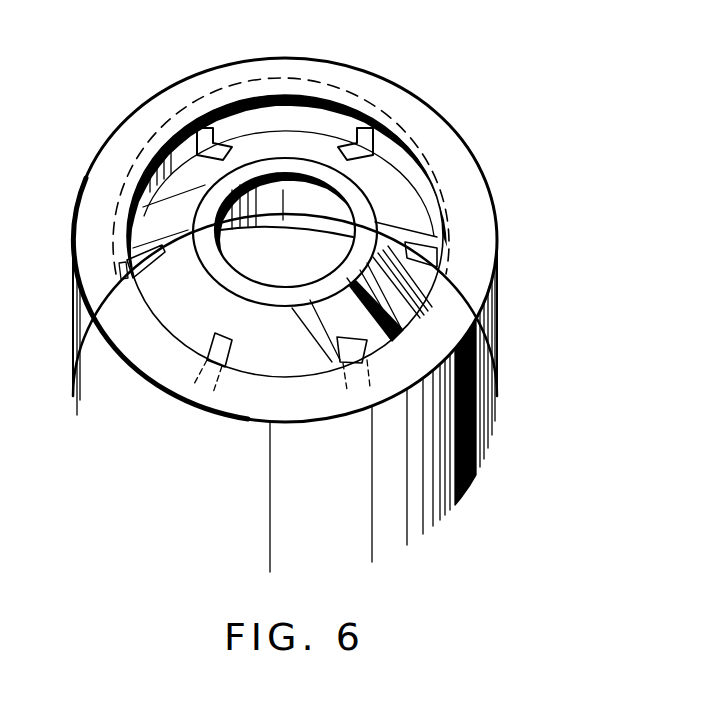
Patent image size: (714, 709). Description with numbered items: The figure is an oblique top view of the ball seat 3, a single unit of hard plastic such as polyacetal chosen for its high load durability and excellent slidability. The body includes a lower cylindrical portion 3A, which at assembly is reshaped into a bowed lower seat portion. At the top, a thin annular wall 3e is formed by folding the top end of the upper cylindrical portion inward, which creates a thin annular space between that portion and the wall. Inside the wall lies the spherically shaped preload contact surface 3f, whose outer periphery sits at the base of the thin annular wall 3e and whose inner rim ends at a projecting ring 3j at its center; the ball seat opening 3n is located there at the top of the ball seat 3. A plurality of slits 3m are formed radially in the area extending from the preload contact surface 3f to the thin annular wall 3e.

The ball seat 3 is at (458, 130).
The lower cylindrical portion 3A is at (434, 500).
The thin annular wall 3e is at (322, 117).
The projecting ring 3j is at (308, 163).
The preload contact surface 3f is at (400, 210).
The slits 3m is at (420, 258).
The ball seat opening 3n is at (284, 263).